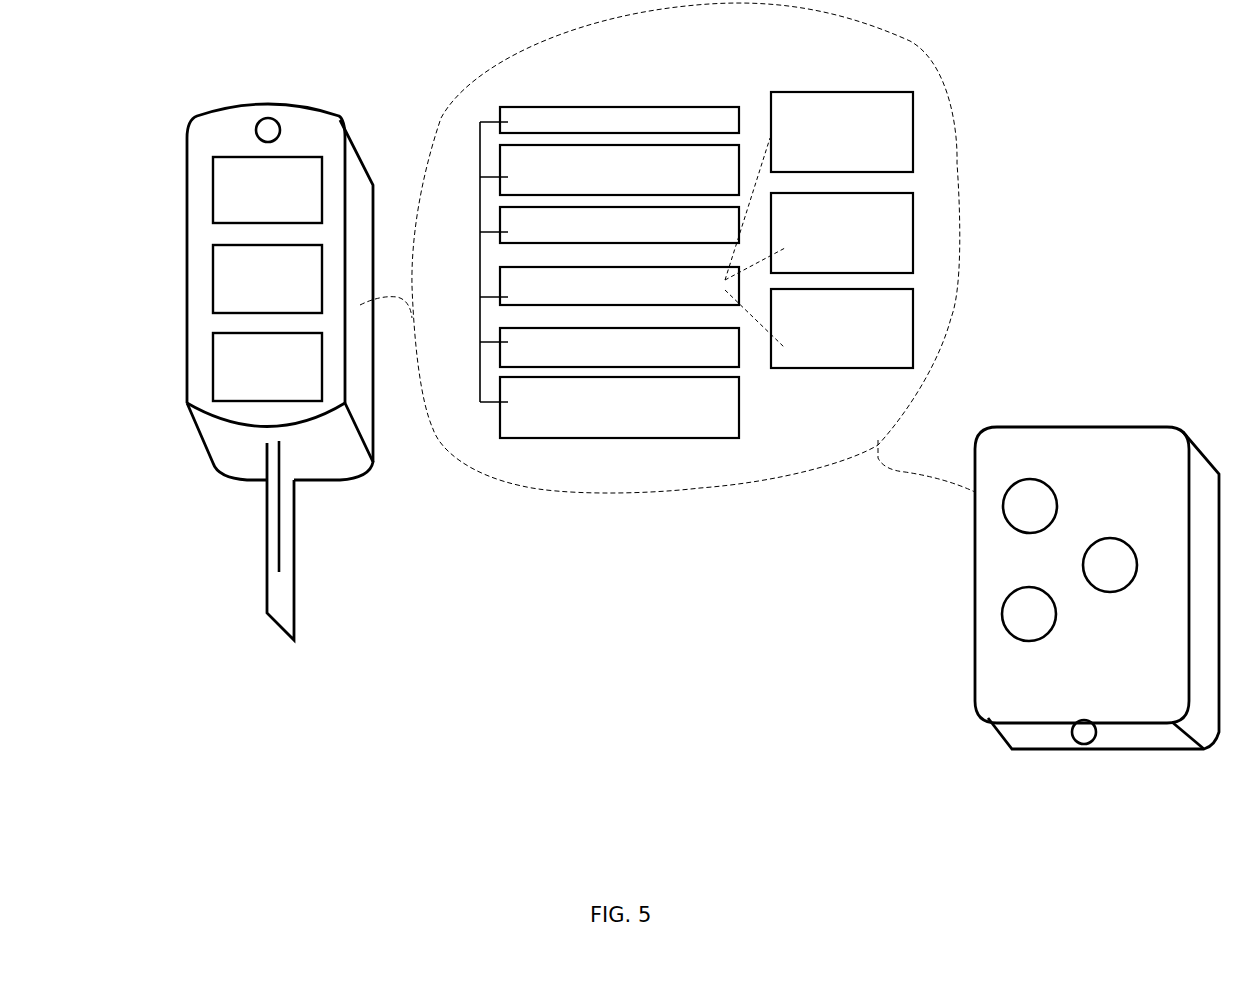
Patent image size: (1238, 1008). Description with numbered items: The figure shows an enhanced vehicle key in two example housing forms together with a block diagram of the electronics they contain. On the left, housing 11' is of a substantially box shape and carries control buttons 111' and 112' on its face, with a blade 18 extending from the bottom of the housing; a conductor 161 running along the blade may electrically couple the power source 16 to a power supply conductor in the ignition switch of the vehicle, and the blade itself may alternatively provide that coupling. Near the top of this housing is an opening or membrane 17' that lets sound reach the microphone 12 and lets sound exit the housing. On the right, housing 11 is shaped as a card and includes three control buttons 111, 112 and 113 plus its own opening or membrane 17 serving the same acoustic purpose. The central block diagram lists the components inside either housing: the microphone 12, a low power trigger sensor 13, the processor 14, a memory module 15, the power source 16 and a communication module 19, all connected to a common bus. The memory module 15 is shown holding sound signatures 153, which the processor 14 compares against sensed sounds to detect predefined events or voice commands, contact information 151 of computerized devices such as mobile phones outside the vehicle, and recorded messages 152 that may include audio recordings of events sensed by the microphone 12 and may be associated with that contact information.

The housing 11' is at (229, 260).
The opening or membrane 17' is at (295, 92).
The control button 111' is at (267, 190).
The control button 112' is at (267, 323).
The blade 18 is at (268, 617).
The conductor 161 is at (280, 507).
The microphone 12 is at (694, 130).
The low power trigger sensor 13 is at (668, 192).
The processor 14 is at (684, 236).
The memory module 15 is at (717, 296).
The power source 16 is at (703, 358).
The communication module 19 is at (673, 430).
The sound signatures 153 is at (823, 168).
The contact information 151 is at (823, 270).
The recorded messages 152 is at (823, 366).
The housing 11 is at (1097, 555).
The control button 111 is at (1030, 506).
The control button 112 is at (1110, 565).
The control button 113 is at (1009, 626).
The opening or membrane 17 is at (1048, 772).